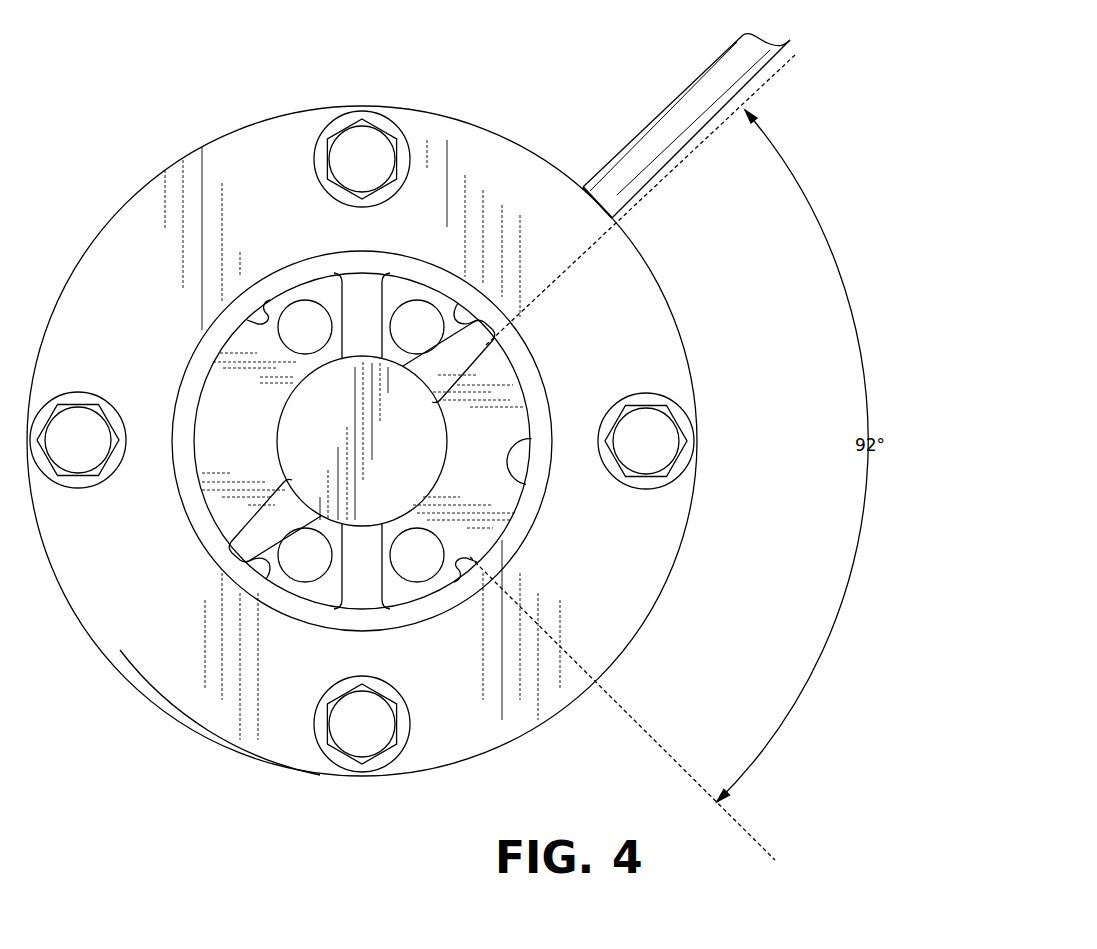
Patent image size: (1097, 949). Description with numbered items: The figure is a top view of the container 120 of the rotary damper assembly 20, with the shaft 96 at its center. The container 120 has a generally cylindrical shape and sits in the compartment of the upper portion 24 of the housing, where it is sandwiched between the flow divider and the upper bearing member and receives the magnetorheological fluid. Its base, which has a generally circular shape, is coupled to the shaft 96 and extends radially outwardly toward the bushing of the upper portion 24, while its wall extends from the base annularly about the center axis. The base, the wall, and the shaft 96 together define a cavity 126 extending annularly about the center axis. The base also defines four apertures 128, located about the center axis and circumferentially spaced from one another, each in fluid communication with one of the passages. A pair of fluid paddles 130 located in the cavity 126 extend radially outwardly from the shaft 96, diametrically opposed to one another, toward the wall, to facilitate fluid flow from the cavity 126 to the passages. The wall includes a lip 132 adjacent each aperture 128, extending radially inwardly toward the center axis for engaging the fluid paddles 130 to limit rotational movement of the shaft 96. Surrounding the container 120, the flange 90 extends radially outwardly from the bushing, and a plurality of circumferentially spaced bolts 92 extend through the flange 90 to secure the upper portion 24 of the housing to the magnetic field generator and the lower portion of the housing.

The rotary damper assembly 20 is at (370, 723).
The upper portion 24 is at (248, 760).
The flange 90 is at (113, 628).
The bolts 92 is at (368, 142).
The shaft 96 is at (417, 438).
The container 120 is at (288, 275).
The cavity 126 is at (526, 484).
The apertures 128 is at (323, 305).
The fluid paddles 130 is at (255, 578).
The lip 132 is at (462, 316).